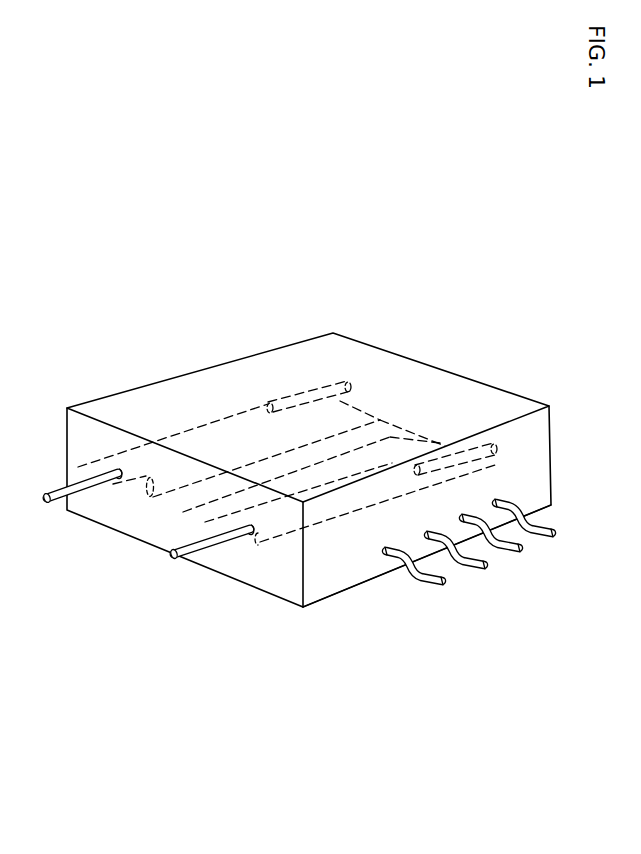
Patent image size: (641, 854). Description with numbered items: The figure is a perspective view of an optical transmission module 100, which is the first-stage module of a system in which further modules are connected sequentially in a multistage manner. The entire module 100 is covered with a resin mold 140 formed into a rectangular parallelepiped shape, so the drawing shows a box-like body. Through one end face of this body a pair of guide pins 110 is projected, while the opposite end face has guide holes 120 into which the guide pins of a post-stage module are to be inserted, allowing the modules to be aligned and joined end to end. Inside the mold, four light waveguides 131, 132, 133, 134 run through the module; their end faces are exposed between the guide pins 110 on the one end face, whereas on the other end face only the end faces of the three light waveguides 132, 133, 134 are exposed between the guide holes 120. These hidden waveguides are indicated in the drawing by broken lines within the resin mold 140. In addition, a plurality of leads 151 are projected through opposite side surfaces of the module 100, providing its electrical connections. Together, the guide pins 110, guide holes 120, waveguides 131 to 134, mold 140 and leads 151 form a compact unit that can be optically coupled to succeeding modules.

The optical transmission module 100 is at (211, 363).
The guide pins 110 is at (58, 490).
The guide holes 120 is at (342, 382).
The light waveguide 131 is at (152, 480).
The light waveguide 132 is at (265, 462).
The light waveguide 133 is at (390, 437).
The light waveguide 134 is at (268, 505).
The resin mold 140 is at (344, 592).
The leads 151 is at (423, 584).